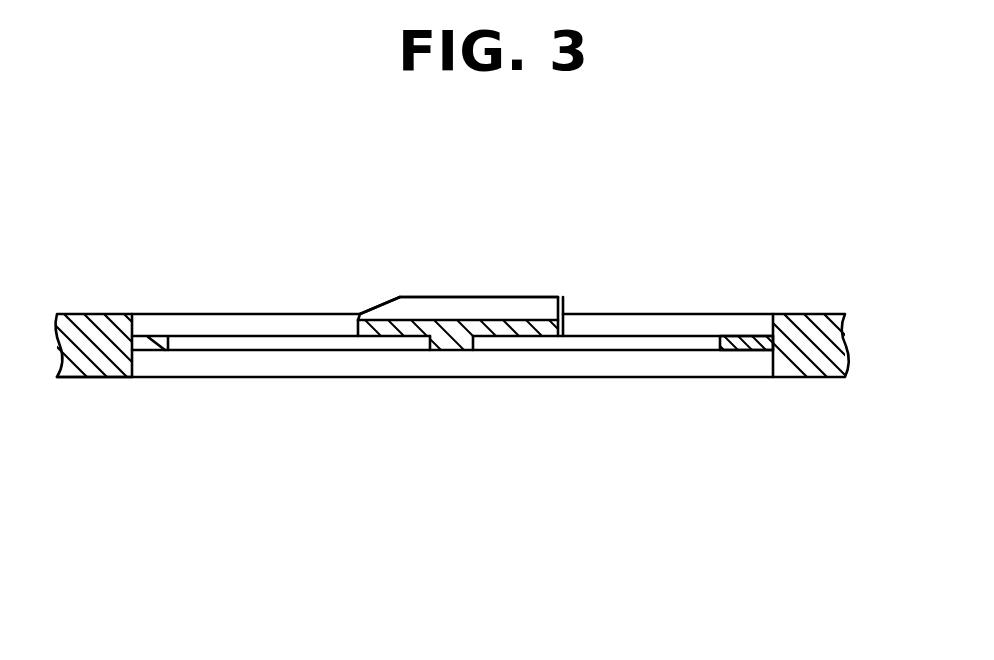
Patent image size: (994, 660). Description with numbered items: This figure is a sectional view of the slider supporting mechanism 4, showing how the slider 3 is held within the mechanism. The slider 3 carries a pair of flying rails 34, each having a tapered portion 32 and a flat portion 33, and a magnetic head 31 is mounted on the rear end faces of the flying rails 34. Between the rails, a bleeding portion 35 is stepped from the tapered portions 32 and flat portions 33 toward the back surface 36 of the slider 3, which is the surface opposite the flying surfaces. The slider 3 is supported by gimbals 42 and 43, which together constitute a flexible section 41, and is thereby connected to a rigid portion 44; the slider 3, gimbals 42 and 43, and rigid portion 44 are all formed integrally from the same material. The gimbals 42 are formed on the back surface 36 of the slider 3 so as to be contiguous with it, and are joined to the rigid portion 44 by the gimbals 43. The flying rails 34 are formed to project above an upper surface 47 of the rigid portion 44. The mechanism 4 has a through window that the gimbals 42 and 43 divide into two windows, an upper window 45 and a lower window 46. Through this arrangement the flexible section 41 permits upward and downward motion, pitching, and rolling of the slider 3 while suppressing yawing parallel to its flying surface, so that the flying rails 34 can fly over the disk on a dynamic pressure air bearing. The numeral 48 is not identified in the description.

The slider 3 is at (444, 252).
The magnetic head 31 is at (566, 310).
The tapered portion 32 is at (386, 308).
The flat portion 33 is at (517, 297).
The flying rails 34 is at (470, 288).
The bleeding portion 35 is at (447, 318).
The back surface 36 is at (393, 340).
The slider supporting mechanism 4 is at (465, 313).
The flexible section 41 is at (749, 324).
The gimbals 42 is at (453, 340).
The gimbals 43 is at (232, 338).
The rigid portion 44 is at (819, 377).
The upper window 45 is at (663, 317).
The lower window 46 is at (655, 366).
The upper surface 47 is at (93, 326).
The bottom surface 48 is at (93, 378).